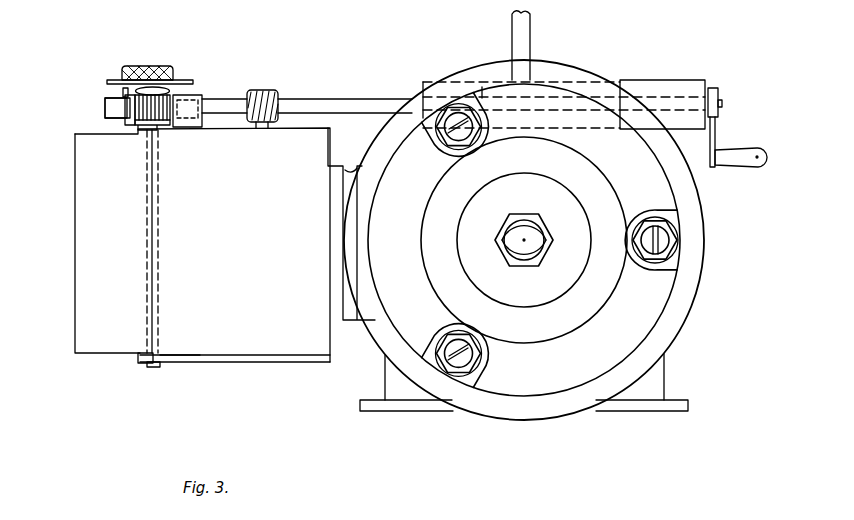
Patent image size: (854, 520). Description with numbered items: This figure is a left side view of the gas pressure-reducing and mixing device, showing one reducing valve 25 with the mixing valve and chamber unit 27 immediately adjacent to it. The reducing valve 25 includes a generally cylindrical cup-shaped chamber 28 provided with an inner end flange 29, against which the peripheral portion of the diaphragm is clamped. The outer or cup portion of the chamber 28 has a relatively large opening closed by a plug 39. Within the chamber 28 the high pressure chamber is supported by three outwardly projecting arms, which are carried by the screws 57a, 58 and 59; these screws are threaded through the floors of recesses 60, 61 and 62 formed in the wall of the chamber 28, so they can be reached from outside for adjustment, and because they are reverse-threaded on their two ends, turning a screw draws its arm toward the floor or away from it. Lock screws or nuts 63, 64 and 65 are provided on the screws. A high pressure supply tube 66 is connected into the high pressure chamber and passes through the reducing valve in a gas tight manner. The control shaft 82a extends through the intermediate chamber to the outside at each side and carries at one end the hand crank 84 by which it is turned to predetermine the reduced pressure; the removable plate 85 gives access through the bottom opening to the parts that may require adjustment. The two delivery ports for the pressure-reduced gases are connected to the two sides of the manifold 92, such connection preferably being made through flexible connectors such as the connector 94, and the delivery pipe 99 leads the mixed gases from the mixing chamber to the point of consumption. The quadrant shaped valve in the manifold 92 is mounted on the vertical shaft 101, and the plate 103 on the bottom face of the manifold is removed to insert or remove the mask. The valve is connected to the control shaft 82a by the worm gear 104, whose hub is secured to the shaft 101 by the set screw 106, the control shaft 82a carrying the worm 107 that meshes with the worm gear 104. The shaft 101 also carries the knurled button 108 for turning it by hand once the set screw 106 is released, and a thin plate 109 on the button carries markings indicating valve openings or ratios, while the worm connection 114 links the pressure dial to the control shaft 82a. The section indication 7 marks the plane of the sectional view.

The reducing valve 25 is at (552, 370).
The mixing valve and chamber unit 27 is at (177, 368).
The cylindrical chamber 28 is at (524, 240).
The inner end flange 29 is at (668, 327).
The plug 39 is at (537, 198).
The screw 57a is at (437, 143).
The screw 58 is at (668, 230).
The screw 59 is at (474, 354).
The recess 60 is at (482, 127).
The recess 61 is at (653, 263).
The recess 62 is at (435, 340).
The lock screw or nut 63 is at (458, 137).
The lock screw or nut 64 is at (452, 370).
The lock screw or nut 65 is at (663, 252).
The high pressure supply tube 66 is at (522, 27).
The control shaft 82a is at (335, 101).
The hand crank 84 is at (748, 150).
The removable plate 85 is at (638, 409).
The manifold 92 is at (202, 245).
The flexible connector 94 is at (348, 160).
The delivery connection or pipe 99 is at (98, 340).
The vertical shaft 101 is at (147, 365).
The plate 103 is at (255, 362).
The worm gear 104 is at (107, 108).
The set screw 106 is at (122, 91).
The worm 107 is at (140, 122).
The knurled button 108 is at (172, 63).
The thin plate 109 is at (192, 80).
The worm connection 114 is at (265, 92).
The section line 7- 7 is at (107, 243).